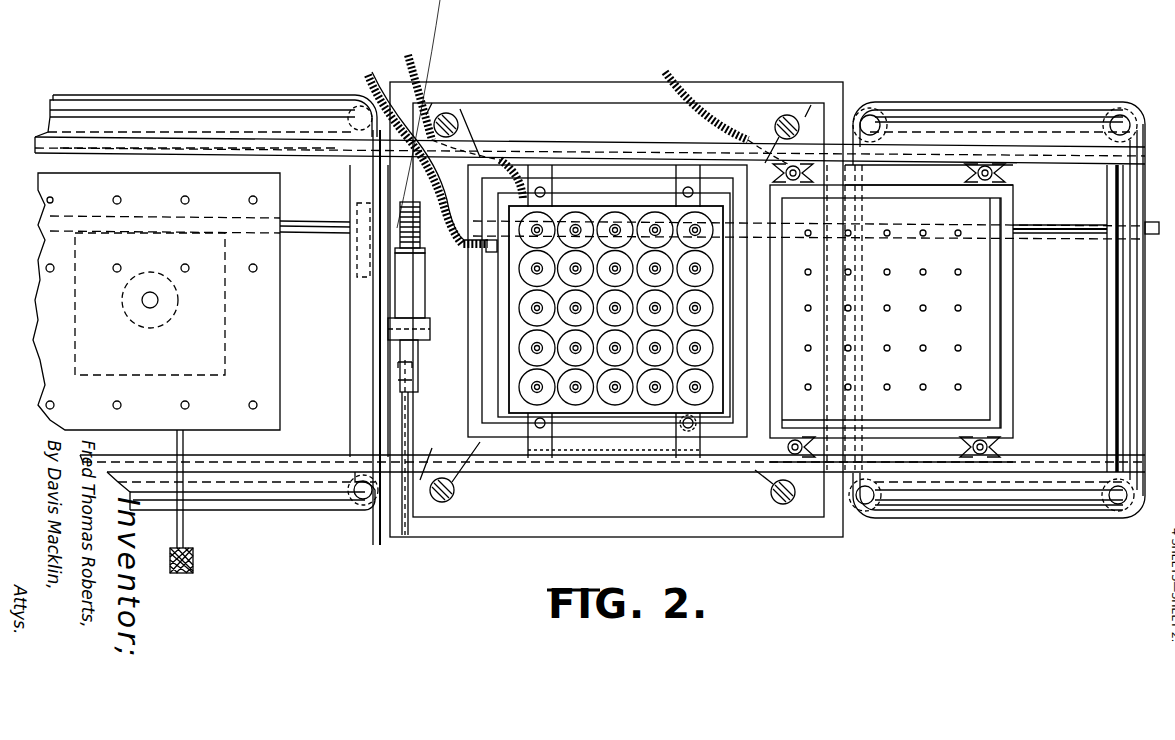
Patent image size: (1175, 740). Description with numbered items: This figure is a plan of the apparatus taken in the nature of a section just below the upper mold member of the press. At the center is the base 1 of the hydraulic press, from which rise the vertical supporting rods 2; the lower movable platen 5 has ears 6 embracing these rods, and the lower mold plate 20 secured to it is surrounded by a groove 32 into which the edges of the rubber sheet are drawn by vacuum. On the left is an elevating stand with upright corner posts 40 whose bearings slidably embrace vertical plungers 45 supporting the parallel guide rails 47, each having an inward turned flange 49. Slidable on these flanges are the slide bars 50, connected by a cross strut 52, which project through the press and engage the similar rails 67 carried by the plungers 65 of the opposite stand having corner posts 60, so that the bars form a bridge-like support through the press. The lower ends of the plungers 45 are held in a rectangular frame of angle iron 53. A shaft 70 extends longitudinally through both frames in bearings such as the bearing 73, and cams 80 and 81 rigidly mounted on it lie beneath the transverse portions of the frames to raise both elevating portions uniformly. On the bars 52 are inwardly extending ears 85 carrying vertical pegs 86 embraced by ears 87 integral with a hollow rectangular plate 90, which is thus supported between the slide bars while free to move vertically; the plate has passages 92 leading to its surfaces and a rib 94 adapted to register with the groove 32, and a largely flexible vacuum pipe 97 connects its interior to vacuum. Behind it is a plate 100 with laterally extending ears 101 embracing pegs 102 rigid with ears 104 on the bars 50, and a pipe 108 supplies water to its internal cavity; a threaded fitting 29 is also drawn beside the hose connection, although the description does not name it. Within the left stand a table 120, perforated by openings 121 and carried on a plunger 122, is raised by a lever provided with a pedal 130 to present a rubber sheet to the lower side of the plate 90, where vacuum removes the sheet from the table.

The base 1 is at (748, 532).
The vertical supporting rods 2 is at (455, 114).
The lower movable platen 5 is at (470, 296).
The ears 6 is at (458, 482).
The lower mold plate 20 is at (468, 398).
The threaded adjusting screw 29 is at (450, 248).
The groove 32 is at (482, 325).
The corner posts 40 is at (366, 90).
The vertical plungers 45 is at (365, 505).
The guide rails 47 is at (185, 112).
The inward turned flange 49 is at (278, 155).
The slide bars 50 is at (328, 148).
The cross strut 52 is at (1105, 335).
The angle iron frame 53 is at (352, 362).
The corner posts 60 is at (1130, 493).
The plungers 65 is at (1120, 115).
The rails 67 is at (955, 120).
The shaft 70 is at (1080, 234).
The bearing 73 is at (1130, 358).
The cam 80 is at (357, 277).
The cam 81 is at (1140, 300).
The ears 85 is at (996, 174).
The vertical pegs 86 is at (975, 174).
The ears 87 is at (990, 448).
The hollow rectangular plate 90 is at (1014, 332).
The passages 92 is at (956, 270).
The rib 94 is at (1000, 298).
The vacuum pipe 97 is at (695, 115).
The plate 100 is at (498, 360).
The laterally extending ears 101 is at (696, 428).
The pegs 102 is at (678, 426).
The ears 104 is at (680, 445).
The pipe 108 is at (503, 175).
The table 120 is at (282, 348).
The openings 121 is at (251, 199).
The plunger 122 is at (158, 301).
The pedal 130 is at (193, 563).